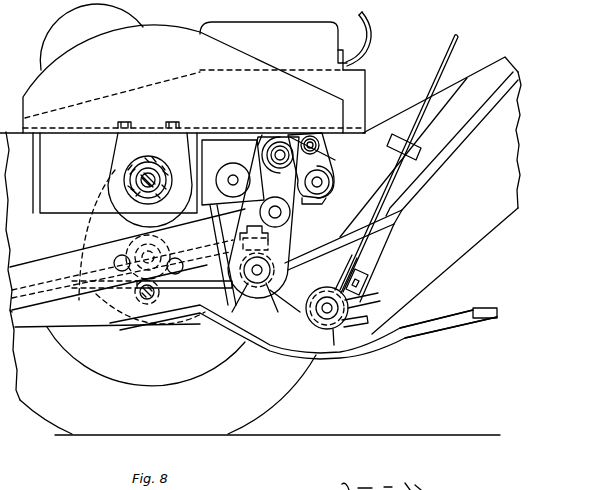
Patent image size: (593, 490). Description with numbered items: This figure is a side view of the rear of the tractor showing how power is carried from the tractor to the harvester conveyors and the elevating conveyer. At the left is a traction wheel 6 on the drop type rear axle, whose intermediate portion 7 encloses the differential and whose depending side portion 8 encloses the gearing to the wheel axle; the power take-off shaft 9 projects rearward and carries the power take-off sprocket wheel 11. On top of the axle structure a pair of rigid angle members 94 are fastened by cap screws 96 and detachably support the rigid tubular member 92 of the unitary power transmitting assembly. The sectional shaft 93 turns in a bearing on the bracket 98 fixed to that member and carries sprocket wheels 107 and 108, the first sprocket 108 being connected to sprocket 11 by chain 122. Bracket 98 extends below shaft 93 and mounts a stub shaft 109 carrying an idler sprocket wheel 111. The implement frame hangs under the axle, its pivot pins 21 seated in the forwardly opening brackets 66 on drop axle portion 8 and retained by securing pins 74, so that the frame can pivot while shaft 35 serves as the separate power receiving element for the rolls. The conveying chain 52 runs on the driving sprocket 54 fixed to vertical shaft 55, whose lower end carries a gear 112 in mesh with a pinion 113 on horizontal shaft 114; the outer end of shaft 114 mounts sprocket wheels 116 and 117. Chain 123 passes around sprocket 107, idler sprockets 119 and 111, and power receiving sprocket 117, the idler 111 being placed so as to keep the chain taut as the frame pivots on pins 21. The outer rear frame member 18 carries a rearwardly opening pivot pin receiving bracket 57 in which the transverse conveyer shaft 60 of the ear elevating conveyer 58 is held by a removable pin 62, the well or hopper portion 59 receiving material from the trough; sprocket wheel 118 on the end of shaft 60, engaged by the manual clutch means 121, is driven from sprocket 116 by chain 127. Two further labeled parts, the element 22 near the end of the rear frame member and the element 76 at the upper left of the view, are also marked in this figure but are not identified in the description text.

The traction wheel 6 is at (275, 398).
The intermediate portion of rear axle 7 is at (113, 152).
The depending side portion of rear axle 8 is at (80, 231).
The power take-off shaft 9 is at (231, 183).
The power take-off sprocket wheel 11 is at (226, 172).
The outer rear frame member 18 is at (425, 328).
The pivot pin 21 is at (152, 296).
The end cap 22 is at (488, 310).
The shaft 35 is at (6, 335).
The conveying chain 52 is at (55, 288).
The driving sprocket 54 is at (223, 255).
The vertical shaft 55 is at (254, 231).
The pivot pin receiving bracket 57 is at (362, 322).
The ear elevating conveyer 58 is at (483, 232).
The well or hopper portion 59 is at (384, 243).
The transverse conveyer shaft 60 is at (311, 318).
The removable pin 62 is at (348, 333).
The pivot pin receiving bracket 66 is at (115, 267).
The securing pin 74 is at (144, 298).
The cover 76 is at (54, 29).
The rigid tubular member 92 is at (313, 136).
The sectional shaft 93 is at (280, 150).
The rigid angle member 94 is at (366, 92).
The cap screw 96 is at (173, 126).
The bracket 98 is at (326, 160).
The sprocket wheel 107 is at (277, 166).
The sprocket wheel 108 is at (258, 145).
The stub shaft 109 is at (327, 188).
The idler sprocket wheel 111 is at (328, 182).
The gear 112 is at (278, 278).
The pinion 113 is at (270, 232).
The horizontal shaft 114 is at (257, 292).
The sprocket wheel 116 is at (228, 297).
The sprocket wheel 117 is at (292, 267).
The sprocket wheel 118 is at (333, 346).
The idler sprocket 119 is at (297, 213).
The clutch means 121 is at (360, 300).
The chain 122 is at (247, 160).
The chain 123 is at (327, 200).
The chain 127 is at (278, 318).